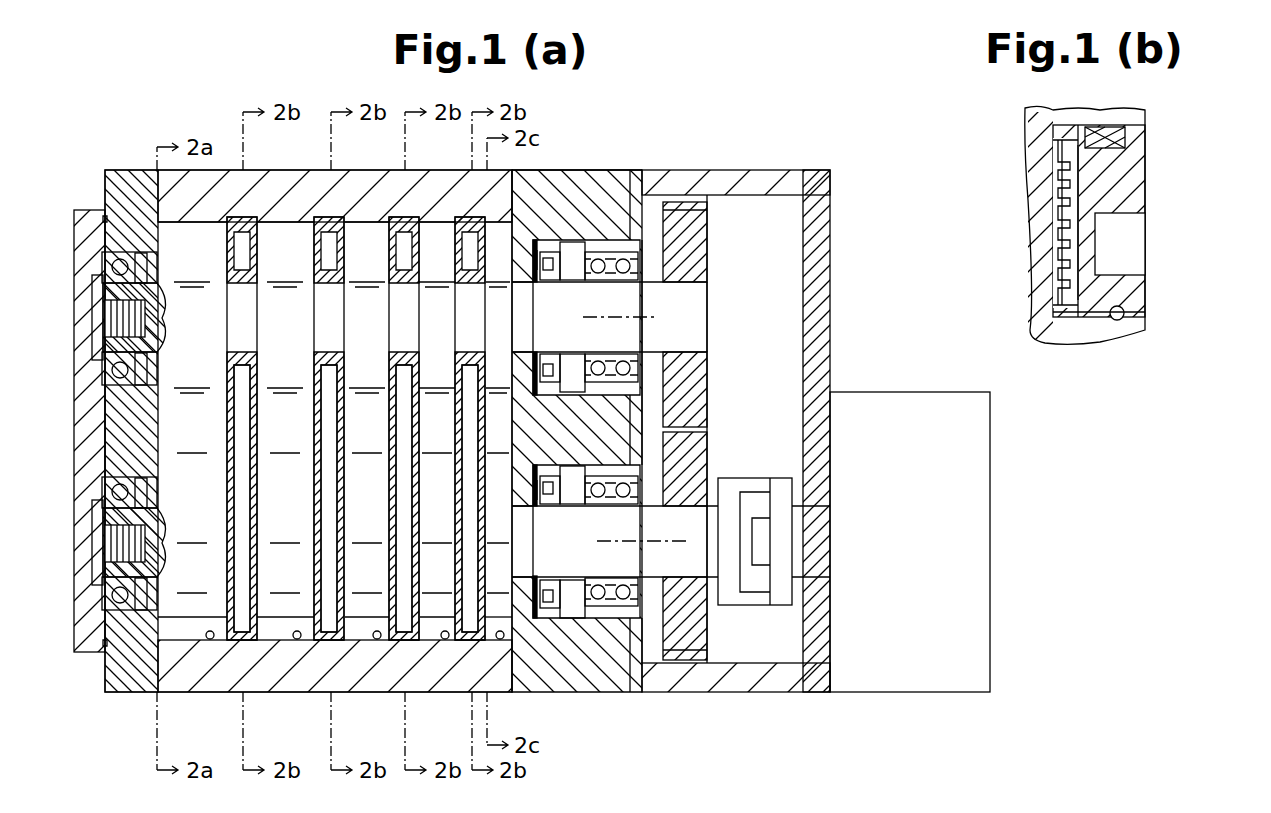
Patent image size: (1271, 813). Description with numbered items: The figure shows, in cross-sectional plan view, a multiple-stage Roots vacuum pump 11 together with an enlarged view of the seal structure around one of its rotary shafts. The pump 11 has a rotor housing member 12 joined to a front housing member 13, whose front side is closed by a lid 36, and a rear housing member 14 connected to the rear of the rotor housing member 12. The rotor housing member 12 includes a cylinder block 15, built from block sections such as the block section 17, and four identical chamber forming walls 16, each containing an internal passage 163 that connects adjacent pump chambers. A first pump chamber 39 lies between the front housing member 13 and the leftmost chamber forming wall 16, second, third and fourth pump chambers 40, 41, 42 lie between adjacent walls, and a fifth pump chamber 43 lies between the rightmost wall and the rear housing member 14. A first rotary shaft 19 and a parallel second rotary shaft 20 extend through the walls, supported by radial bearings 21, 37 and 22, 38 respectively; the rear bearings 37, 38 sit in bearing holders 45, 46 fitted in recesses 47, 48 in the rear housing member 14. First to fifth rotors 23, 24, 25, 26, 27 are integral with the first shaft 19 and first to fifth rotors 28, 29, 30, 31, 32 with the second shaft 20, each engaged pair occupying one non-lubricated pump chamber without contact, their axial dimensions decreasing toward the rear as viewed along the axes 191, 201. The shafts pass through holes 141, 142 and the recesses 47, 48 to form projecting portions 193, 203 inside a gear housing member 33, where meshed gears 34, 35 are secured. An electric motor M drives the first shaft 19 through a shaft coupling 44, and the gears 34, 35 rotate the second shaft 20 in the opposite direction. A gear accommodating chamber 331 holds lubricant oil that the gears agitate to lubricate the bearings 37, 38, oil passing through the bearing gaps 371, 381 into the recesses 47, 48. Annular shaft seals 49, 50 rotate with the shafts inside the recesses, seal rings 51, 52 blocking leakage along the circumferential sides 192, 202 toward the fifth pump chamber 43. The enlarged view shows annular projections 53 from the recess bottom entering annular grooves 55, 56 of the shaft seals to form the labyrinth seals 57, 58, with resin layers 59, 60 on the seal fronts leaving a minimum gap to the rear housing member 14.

In FIG. 1A, the pump 11 is at (118, 713).
In FIG. 1A, the rotor housing member 12 is at (348, 170).
In FIG. 1A, the front housing member 13 is at (120, 170).
In FIG. 1A, the rear housing member 14 is at (612, 170).
In FIG. 1B, the rear housing member 14 is at (1038, 289).
In FIG. 1A, the cylinder block 15 is at (265, 170).
In FIG. 1A, the chamber forming walls 16 is at (239, 640).
In FIG. 1A, the block section 17 is at (343, 698).
In FIG. 1A, the first rotary shaft 19 is at (150, 518).
In FIG. 1B, the first rotary shaft 19 is at (1024, 130).
In FIG. 1A, the second rotary shaft 20 is at (166, 300).
In FIG. 1B, the second rotary shaft 20 is at (1085, 225).
In FIG. 1A, the radial bearing 21 is at (126, 594).
In FIG. 1A, the radial bearing 22 is at (126, 369).
In FIG. 1A, the first rotor 23 is at (181, 617).
In FIG. 1A, the second rotor 24 is at (273, 617).
In FIG. 1A, the third rotor 25 is at (356, 617).
In FIG. 1A, the fourth rotor 26 is at (430, 617).
In FIG. 1A, the fifth rotor 27 is at (496, 617).
In FIG. 1A, the first rotor 28 is at (183, 237).
In FIG. 1A, the second rotor 29 is at (281, 237).
In FIG. 1A, the third rotor 30 is at (365, 237).
In FIG. 1A, the fourth rotor 31 is at (432, 237).
In FIG. 1A, the fifth rotor 32 is at (497, 237).
In FIG. 1A, the gear housing member 33 is at (735, 170).
In FIG. 1A, the gear 34 is at (682, 650).
In FIG. 1A, the gear 35 is at (697, 237).
In FIG. 1A, the lid 36 is at (94, 210).
In FIG. 1A, the radial bearing 37 is at (588, 622).
In FIG. 1A, the radial bearing 38 is at (632, 170).
In FIG. 1A, the first pump chamber 39 is at (210, 639).
In FIG. 1A, the second pump chamber 40 is at (297, 639).
In FIG. 1A, the third pump chamber 41 is at (377, 639).
In FIG. 1A, the fourth pump chamber 42 is at (445, 639).
In FIG. 1A, the fifth pump chamber 43 is at (500, 639).
In FIG. 1A, the shaft coupling 44 is at (762, 470).
In FIG. 1A, the bearing holder 45 is at (618, 617).
In FIG. 1A, the bearing holder 46 is at (610, 247).
In FIG. 1A, the recess 47 is at (562, 618).
In FIG. 1B, the recess 47 is at (1117, 322).
In FIG. 1A, the recess 48 is at (568, 250).
In FIG. 1B, the recess 48 is at (1117, 313).
In FIG. 1A, the first annular shaft seal 49 is at (545, 617).
In FIG. 1B, the first annular shaft seal 49 is at (1052, 330).
In FIG. 1A, the second annular shaft seal 50 is at (541, 250).
In FIG. 1A, the seal ring 51 is at (538, 500).
In FIG. 1B, the seal ring 51 is at (1127, 133).
In FIG. 1A, the seal ring 52 is at (537, 283).
In FIG. 1B, the seal ring 52 is at (1105, 137).
In FIG. 1B, the annular projections 53 is at (1122, 142).
In FIG. 1B, the annular grooves 55 is at (1057, 258).
In FIG. 1B, the annular grooves 56 is at (1065, 222).
In FIG. 1A, the first labyrinth seal 57 is at (532, 600).
In FIG. 1B, the first labyrinth seal 57 is at (1146, 263).
In FIG. 1A, the second labyrinth seal 58 is at (532, 380).
In FIG. 1B, the second labyrinth seal 58 is at (1120, 244).
In FIG. 1B, the resin layer 59 is at (1058, 190).
In FIG. 1B, the resin layer 60 is at (1068, 222).
In FIG. 1A, the through hole 141 is at (532, 573).
In FIG. 1A, the through hole 142 is at (533, 347).
In FIG. 1A, the passage 163 is at (235, 435).
In FIG. 1A, the axis 191 is at (653, 540).
In FIG. 1A, the circumferential side 192 is at (650, 503).
In FIG. 1A, the projecting portion 193 is at (712, 563).
In FIG. 1A, the axis 201 is at (650, 312).
In FIG. 1A, the circumferential side 202 is at (680, 368).
In FIG. 1A, the projecting portion 203 is at (708, 293).
In FIG. 1A, the gear accommodating chamber 331 is at (737, 256).
In FIG. 1A, the gap 371 is at (646, 600).
In FIG. 1A, the gap 381 is at (645, 375).
In FIG. 1A, the electric motor M is at (990, 555).